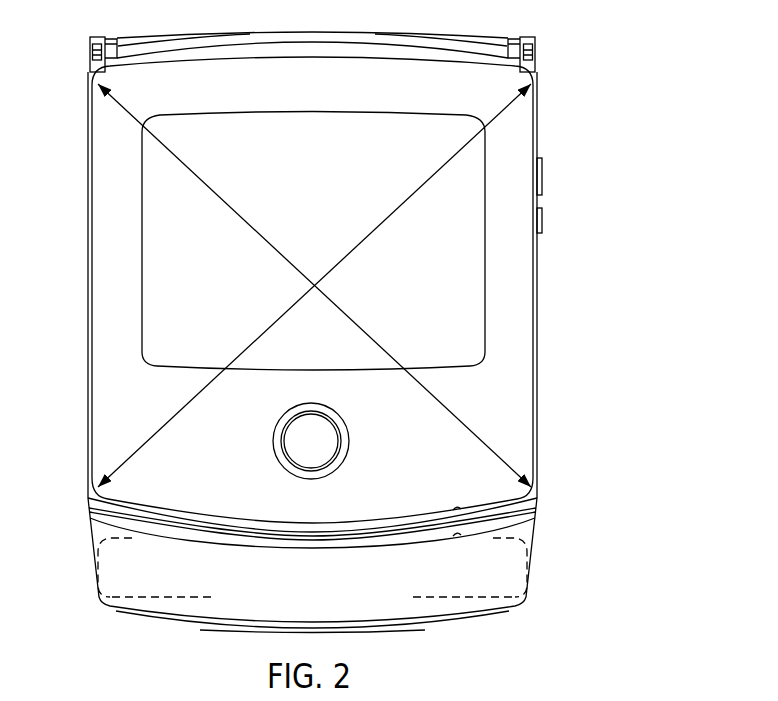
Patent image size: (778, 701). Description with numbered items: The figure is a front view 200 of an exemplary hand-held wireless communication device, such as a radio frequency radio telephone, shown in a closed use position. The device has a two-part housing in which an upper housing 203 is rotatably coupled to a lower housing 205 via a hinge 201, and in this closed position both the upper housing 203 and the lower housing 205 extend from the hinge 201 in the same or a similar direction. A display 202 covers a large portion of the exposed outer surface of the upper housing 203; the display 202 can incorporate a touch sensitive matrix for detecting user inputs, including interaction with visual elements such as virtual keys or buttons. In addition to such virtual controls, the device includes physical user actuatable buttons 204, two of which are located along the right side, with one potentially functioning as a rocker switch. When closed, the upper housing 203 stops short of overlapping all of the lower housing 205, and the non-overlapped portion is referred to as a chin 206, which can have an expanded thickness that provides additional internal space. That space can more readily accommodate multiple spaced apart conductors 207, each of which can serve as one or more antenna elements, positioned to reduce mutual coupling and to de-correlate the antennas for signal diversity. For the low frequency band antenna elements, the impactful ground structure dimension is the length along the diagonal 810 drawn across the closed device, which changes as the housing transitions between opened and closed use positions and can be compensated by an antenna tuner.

The front view 200 is at (617, 56).
The hinge 201 is at (530, 40).
The display 202 is at (457, 342).
The upper housing 203 is at (525, 410).
The physical user actuatable buttons 204 is at (543, 178).
The lower housing 205 is at (482, 565).
The chin 206 is at (137, 580).
The conductors 207 is at (167, 599).
The diagonal 810 is at (131, 114).